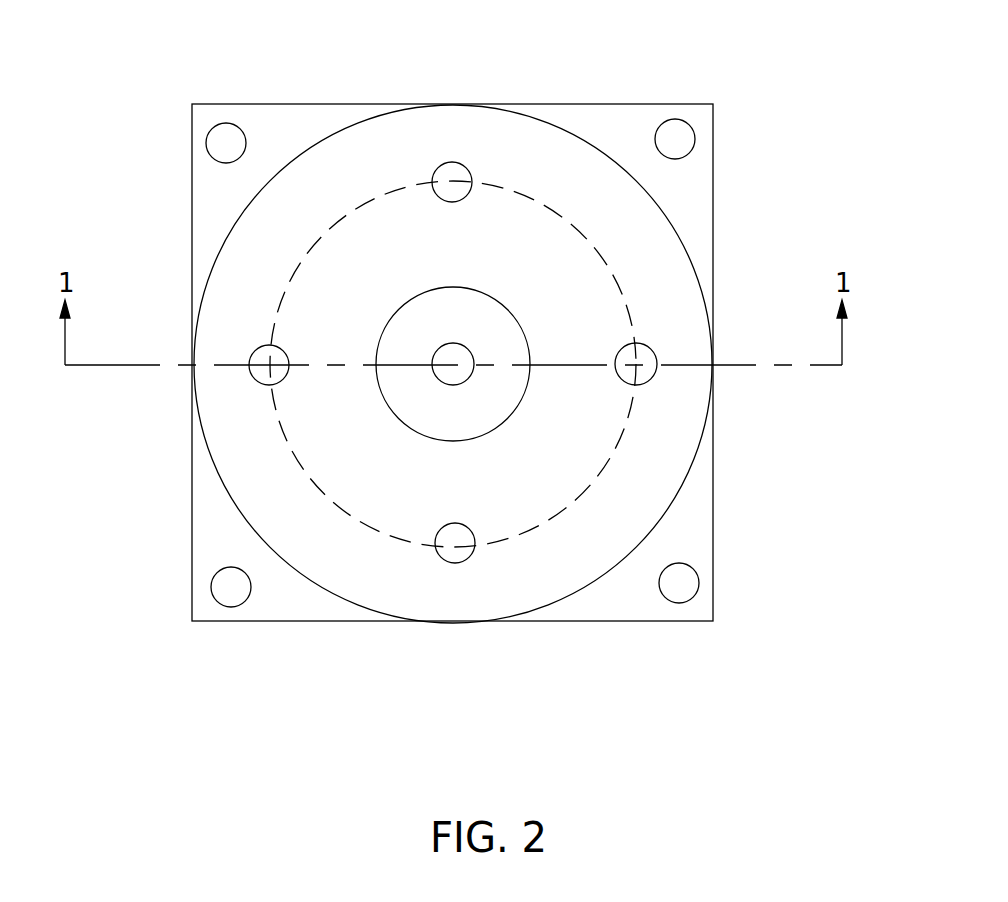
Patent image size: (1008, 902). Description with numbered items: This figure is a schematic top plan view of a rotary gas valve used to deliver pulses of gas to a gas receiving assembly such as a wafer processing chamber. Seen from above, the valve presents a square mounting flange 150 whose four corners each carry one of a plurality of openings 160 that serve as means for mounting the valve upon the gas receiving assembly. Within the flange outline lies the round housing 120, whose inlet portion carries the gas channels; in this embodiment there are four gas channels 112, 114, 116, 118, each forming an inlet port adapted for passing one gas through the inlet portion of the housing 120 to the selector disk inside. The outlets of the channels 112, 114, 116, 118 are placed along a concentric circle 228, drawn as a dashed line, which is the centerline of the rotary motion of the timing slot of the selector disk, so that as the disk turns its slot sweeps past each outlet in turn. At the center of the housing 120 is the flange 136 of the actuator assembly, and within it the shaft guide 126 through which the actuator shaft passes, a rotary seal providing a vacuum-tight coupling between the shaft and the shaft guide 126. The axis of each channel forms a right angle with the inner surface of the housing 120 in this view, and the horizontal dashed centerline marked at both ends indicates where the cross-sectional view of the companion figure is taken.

The gas channel 112 is at (453, 162).
The gas channel 114 is at (262, 382).
The gas channel 116 is at (455, 563).
The gas channel 118 is at (652, 347).
The housing 120 is at (697, 460).
The shaft guide 126 is at (470, 352).
The flange 136 is at (390, 320).
The mounting flange 150 is at (712, 190).
The openings 160 is at (700, 580).
The circle 228 is at (600, 473).